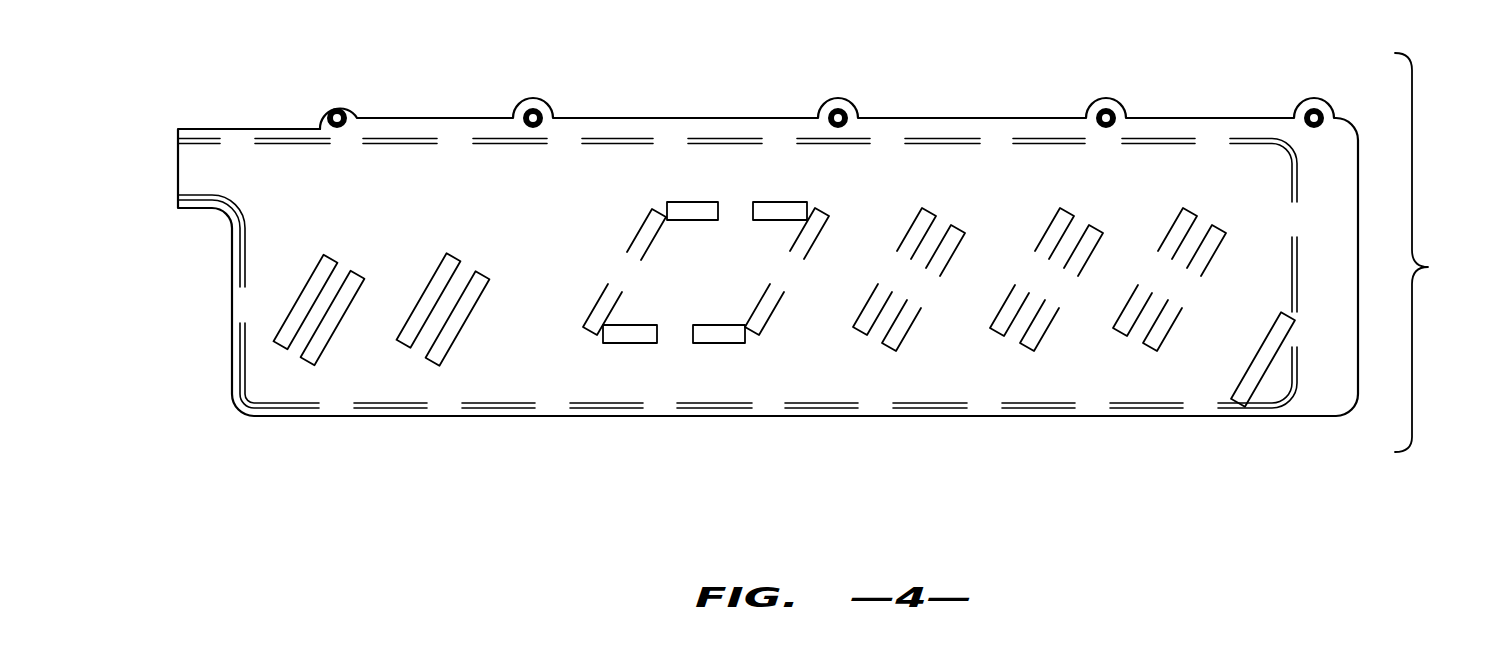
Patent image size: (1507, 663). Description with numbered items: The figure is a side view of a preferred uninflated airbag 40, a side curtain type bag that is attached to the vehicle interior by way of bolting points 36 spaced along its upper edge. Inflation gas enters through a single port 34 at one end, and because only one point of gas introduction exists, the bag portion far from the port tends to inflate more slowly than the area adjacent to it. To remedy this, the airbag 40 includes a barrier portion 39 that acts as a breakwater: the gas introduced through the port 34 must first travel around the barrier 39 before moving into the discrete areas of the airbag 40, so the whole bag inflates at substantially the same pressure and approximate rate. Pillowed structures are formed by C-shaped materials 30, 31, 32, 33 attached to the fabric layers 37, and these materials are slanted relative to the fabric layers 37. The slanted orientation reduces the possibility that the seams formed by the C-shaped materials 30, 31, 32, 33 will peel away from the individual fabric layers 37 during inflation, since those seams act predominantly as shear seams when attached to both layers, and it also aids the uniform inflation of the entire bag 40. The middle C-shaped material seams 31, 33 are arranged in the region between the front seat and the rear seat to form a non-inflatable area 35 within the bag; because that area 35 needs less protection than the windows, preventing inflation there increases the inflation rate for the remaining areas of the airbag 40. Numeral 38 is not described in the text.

The C-shaped material 30 is at (928, 212).
The middle C-shaped material seam 31 is at (587, 335).
The C-shaped material 32 is at (952, 228).
The middle C-shaped material seam 33 is at (697, 200).
The port 34 is at (190, 162).
The non-inflatable area 35 is at (740, 243).
The bolting points 36 is at (333, 110).
The fabric layers 37 is at (485, 127).
The rib lines 38 is at (638, 138).
The barrier portion 39 is at (567, 230).
The airbag 40 is at (1432, 252).